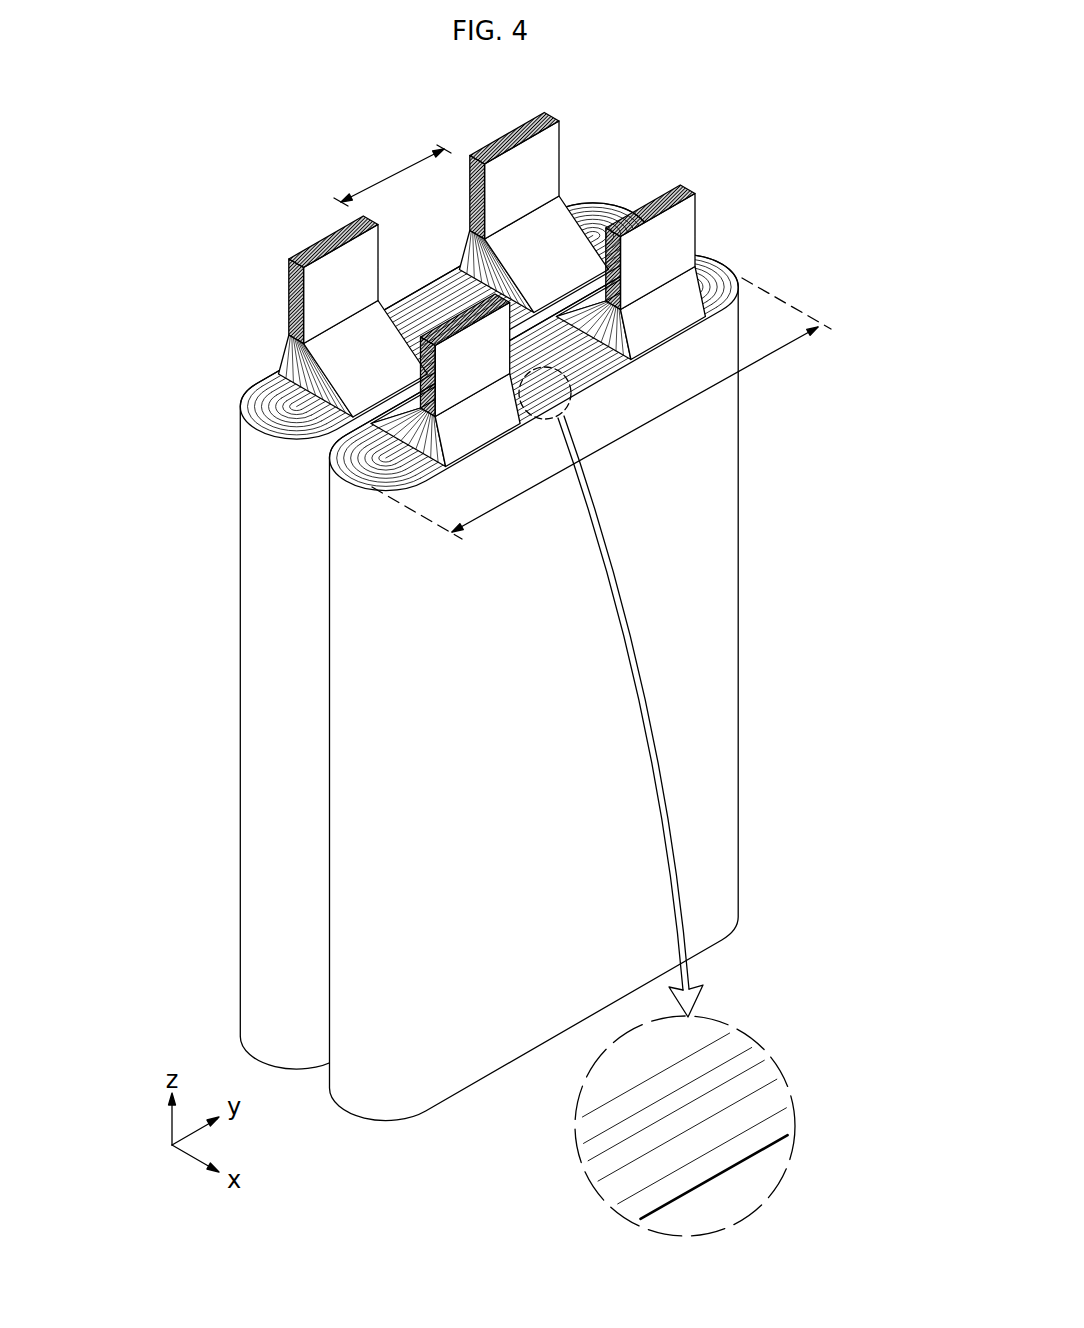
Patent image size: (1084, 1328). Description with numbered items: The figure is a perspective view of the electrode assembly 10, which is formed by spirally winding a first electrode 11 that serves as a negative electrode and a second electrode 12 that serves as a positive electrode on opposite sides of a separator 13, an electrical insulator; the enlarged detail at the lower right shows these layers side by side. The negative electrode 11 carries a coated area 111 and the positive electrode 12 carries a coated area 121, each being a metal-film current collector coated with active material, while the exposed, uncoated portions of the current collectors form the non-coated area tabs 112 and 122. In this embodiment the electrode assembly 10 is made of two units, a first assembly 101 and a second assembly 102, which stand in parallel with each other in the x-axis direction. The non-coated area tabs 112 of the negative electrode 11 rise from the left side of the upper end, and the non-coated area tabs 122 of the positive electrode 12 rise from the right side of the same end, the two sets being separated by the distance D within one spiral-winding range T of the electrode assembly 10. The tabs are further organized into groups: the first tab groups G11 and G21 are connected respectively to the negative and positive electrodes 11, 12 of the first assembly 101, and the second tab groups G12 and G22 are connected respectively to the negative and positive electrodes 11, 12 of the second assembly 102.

The electrode assembly 10 is at (437, 618).
The first assembly 101 is at (262, 930).
The second assembly 102 is at (345, 967).
The first electrode 11 is at (707, 1058).
The coated area 111 is at (773, 1055).
The second electrode 12 is at (762, 1137).
The coated area 121 is at (774, 1100).
The separator 13 is at (737, 1046).
The non-coated area tab 112 is at (332, 330).
The non-coated area tab 122 is at (664, 223).
The first tab group G11 is at (330, 236).
The second tab group G12 is at (446, 328).
The first tab group G21 is at (518, 128).
The second tab group G22 is at (671, 196).
The distance D is at (392, 174).
The spiral-winding range T is at (601, 408).